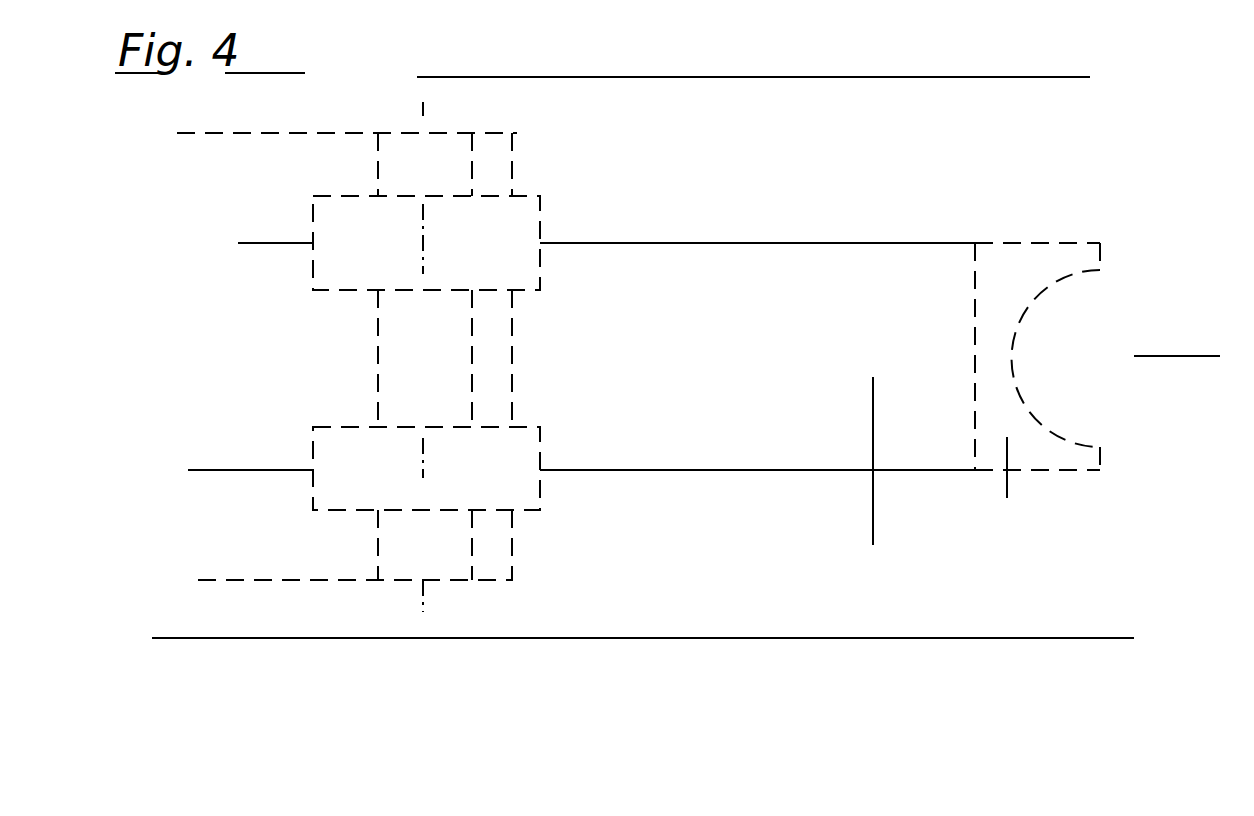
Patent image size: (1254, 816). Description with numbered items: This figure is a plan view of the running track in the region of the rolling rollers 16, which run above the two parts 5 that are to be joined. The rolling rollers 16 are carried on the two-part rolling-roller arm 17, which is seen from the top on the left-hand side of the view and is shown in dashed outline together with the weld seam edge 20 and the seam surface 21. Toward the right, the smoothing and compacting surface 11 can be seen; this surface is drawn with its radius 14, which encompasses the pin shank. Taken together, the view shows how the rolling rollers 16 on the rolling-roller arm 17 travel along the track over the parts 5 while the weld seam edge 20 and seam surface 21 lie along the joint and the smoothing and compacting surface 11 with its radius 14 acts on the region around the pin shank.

The parts to be joined 5 is at (663, 560).
The smoothing and compacting surface 11 is at (1018, 492).
The radius 14 is at (1015, 325).
The rolling rollers 16 is at (520, 215).
The rolling-roller arm 17 is at (277, 532).
The weld seam edge 20 is at (765, 468).
The seam surface 21 is at (878, 486).